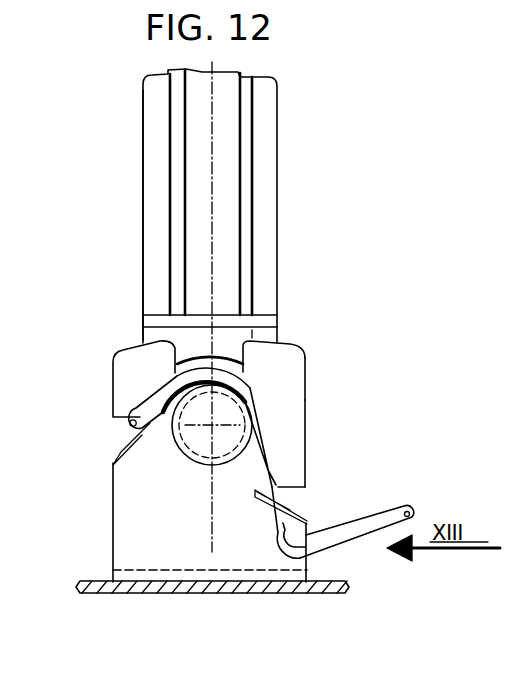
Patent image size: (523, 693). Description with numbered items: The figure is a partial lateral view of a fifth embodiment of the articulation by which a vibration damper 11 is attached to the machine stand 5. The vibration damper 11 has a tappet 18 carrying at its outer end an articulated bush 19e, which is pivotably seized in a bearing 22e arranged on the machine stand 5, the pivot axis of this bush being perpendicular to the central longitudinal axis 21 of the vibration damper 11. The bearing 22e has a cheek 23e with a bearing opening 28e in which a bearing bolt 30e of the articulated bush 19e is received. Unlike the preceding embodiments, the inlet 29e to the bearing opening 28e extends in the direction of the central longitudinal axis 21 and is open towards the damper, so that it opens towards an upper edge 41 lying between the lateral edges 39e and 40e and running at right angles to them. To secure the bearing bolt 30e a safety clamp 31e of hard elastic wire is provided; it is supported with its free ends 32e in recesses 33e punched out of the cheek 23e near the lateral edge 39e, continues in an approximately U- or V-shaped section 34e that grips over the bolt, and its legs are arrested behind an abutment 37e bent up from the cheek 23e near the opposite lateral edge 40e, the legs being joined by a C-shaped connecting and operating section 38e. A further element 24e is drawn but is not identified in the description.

The machine stand 5 is at (95, 596).
The vibration damper 11 is at (288, 132).
The tappet 18 is at (155, 108).
The articulated bush 19e is at (157, 334).
The central longitudinal axis 21 is at (210, 150).
The bearing 22e is at (113, 512).
The cheek 23e is at (270, 366).
The bottom of housing 24e is at (208, 572).
The bearing opening 28e is at (195, 458).
The inlet 29e is at (240, 357).
The bearing bolt 30e is at (197, 432).
The safety clamp 31e is at (358, 543).
The free ends 32e is at (130, 424).
The recesses 33e is at (118, 448).
The U- or V-shaped section 34e is at (150, 404).
The abutment 37e is at (278, 488).
The C-shaped connecting and operating section 38e is at (386, 513).
The lateral edge 39e is at (113, 373).
The lateral edge 40e is at (307, 404).
The upper edge 41 is at (288, 346).